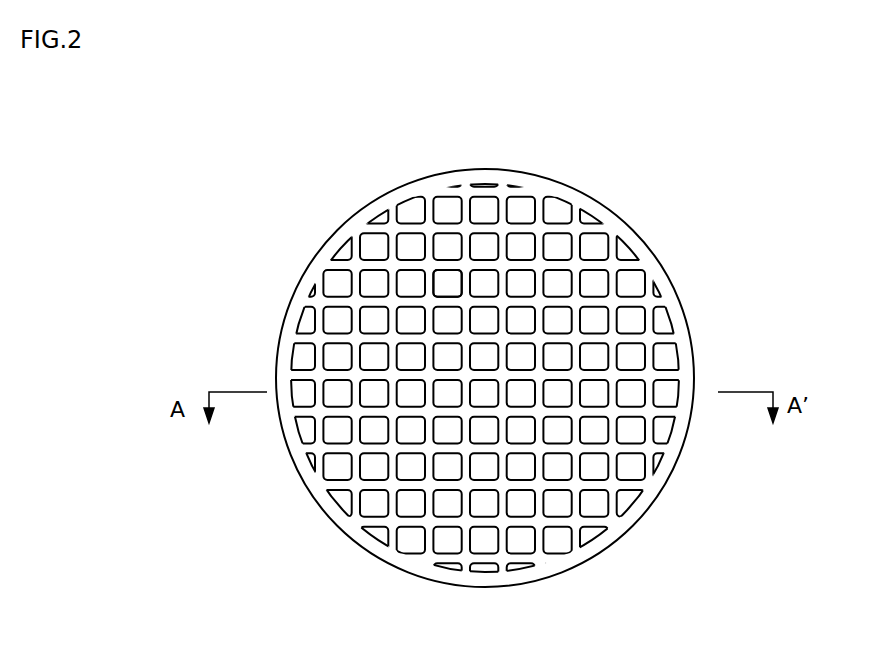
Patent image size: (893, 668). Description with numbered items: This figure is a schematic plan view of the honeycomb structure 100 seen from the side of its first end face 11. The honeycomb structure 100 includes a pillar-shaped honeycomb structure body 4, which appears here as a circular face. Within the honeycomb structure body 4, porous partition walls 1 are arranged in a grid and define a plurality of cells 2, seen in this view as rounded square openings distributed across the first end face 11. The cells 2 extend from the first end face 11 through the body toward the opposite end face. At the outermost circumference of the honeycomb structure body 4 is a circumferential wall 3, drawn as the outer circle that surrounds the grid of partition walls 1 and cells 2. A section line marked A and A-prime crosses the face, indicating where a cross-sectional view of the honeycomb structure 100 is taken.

The honeycomb structure 100 is at (750, 107).
The partition wall 1 is at (502, 255).
The cell 2 is at (445, 283).
The circumferential wall 3 is at (680, 308).
The honeycomb structure body 4 is at (649, 515).
The first end face 11 is at (332, 232).